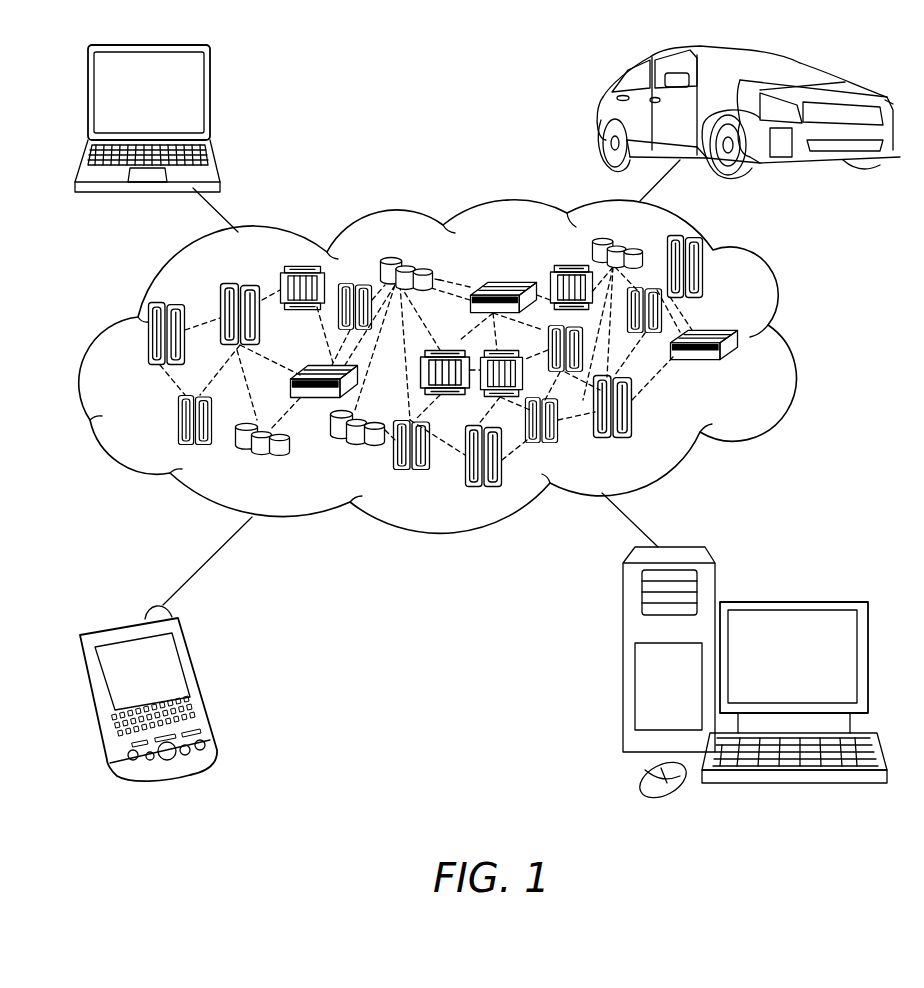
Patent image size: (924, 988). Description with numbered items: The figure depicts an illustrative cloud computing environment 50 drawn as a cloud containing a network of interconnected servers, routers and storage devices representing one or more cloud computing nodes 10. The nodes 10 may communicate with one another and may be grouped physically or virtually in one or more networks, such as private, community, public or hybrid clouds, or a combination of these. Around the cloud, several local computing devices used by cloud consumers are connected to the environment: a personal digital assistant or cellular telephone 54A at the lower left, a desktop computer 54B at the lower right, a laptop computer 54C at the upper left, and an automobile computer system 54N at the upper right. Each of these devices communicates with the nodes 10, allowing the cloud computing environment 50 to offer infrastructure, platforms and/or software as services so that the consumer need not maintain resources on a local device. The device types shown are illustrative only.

The cloud computing nodes 10 is at (740, 370).
The cloud computing environment 50 is at (795, 346).
The personal digital assistant or cellular telephone 54A is at (202, 683).
The desktop computer 54B is at (792, 598).
The laptop computer 54C is at (212, 102).
The automobile computer system 54N is at (597, 113).